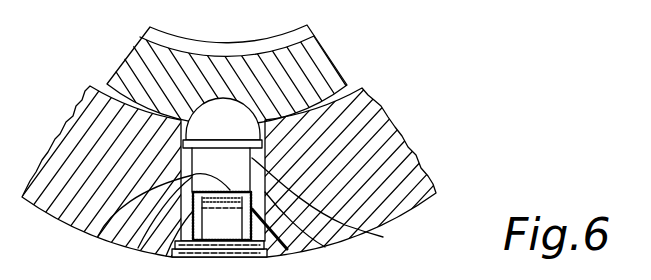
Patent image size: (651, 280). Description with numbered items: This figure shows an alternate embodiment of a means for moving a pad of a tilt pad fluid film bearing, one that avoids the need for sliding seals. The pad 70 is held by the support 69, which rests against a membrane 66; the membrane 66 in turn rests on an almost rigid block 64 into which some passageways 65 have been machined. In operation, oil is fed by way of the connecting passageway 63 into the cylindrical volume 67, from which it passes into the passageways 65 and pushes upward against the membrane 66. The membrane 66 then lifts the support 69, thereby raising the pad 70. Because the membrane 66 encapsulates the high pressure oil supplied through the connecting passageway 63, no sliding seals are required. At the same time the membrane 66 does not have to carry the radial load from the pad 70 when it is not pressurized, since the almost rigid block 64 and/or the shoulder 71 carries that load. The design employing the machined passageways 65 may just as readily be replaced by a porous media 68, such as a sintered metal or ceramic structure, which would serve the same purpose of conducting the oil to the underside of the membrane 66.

The connecting passageway 63 is at (287, 249).
The almost rigid block 64 is at (232, 234).
The passageways 65 is at (139, 249).
The membrane 66 is at (98, 236).
The cylindrical volume 67 is at (166, 256).
The porous media 68 is at (325, 247).
The support 69 is at (232, 128).
The pad 70 is at (241, 72).
The shoulder 71 is at (383, 237).